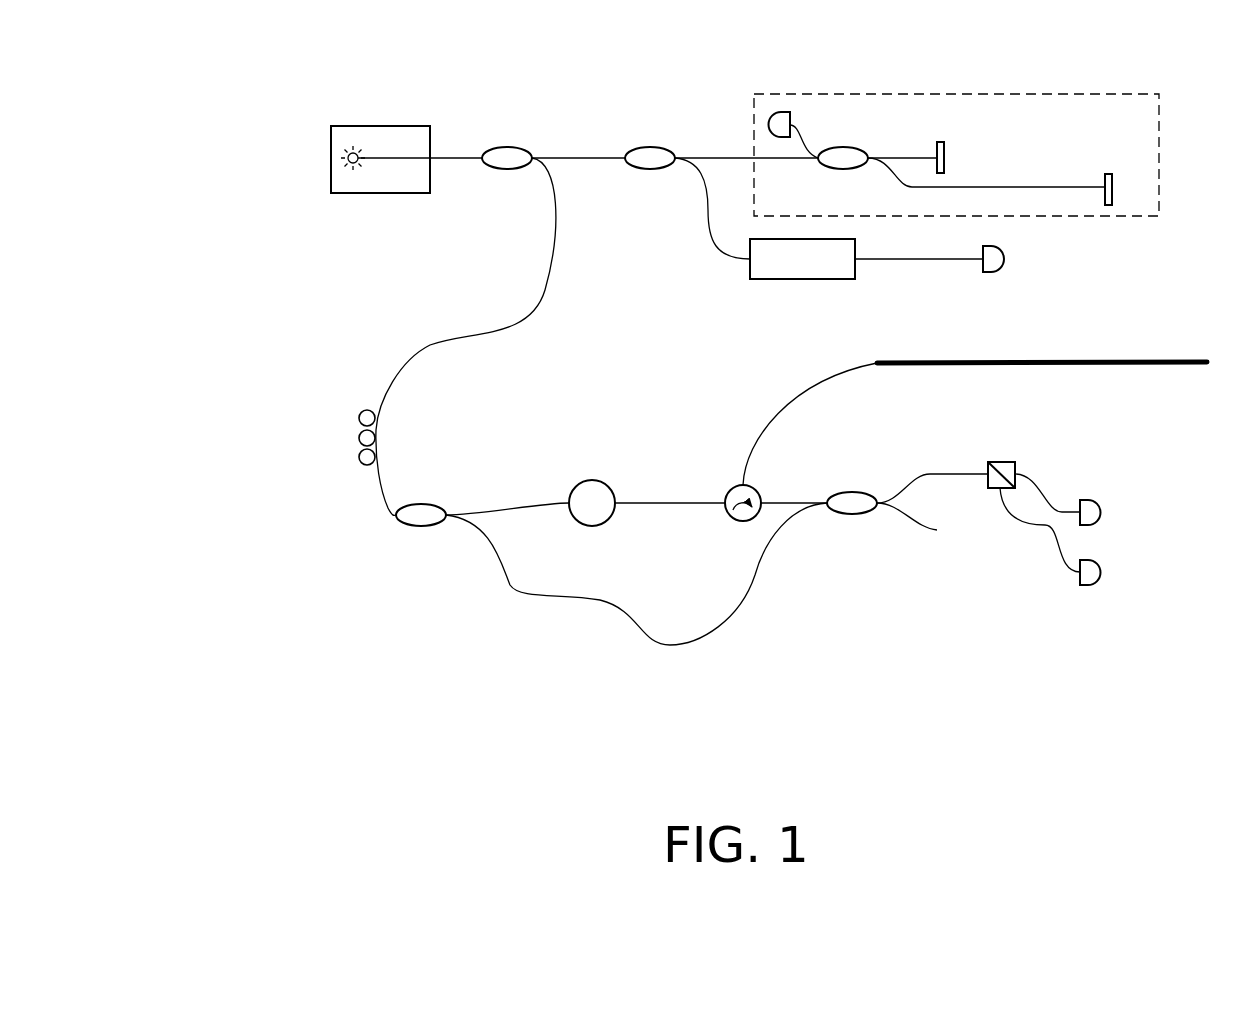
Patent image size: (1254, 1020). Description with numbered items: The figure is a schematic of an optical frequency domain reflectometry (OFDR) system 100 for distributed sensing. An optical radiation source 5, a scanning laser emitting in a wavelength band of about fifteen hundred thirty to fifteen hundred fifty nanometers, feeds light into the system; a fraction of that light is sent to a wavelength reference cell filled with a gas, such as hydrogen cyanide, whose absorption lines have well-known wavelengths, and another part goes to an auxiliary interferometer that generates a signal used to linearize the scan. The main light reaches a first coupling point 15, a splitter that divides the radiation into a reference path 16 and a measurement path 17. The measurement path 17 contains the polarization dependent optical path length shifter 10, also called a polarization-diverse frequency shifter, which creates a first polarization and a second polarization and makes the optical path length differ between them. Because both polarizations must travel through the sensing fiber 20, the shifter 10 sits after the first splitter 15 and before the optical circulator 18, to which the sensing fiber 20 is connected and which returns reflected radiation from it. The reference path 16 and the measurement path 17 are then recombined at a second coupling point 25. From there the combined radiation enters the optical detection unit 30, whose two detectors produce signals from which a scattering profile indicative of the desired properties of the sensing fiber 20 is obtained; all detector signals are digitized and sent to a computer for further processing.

The optical frequency domain reflectometry system 100 is at (143, 128).
The optical radiation source 5 is at (306, 150).
The polarization dependent optical path length shifter 10 is at (617, 545).
The first coupling point 15 is at (406, 545).
The reference path 16 is at (688, 666).
The measurement path 17 is at (626, 434).
The optical circulator 18 is at (722, 475).
The sensing fiber 20 is at (1175, 344).
The second coupling point 25 is at (865, 538).
The optical detection unit 30 is at (1041, 617).